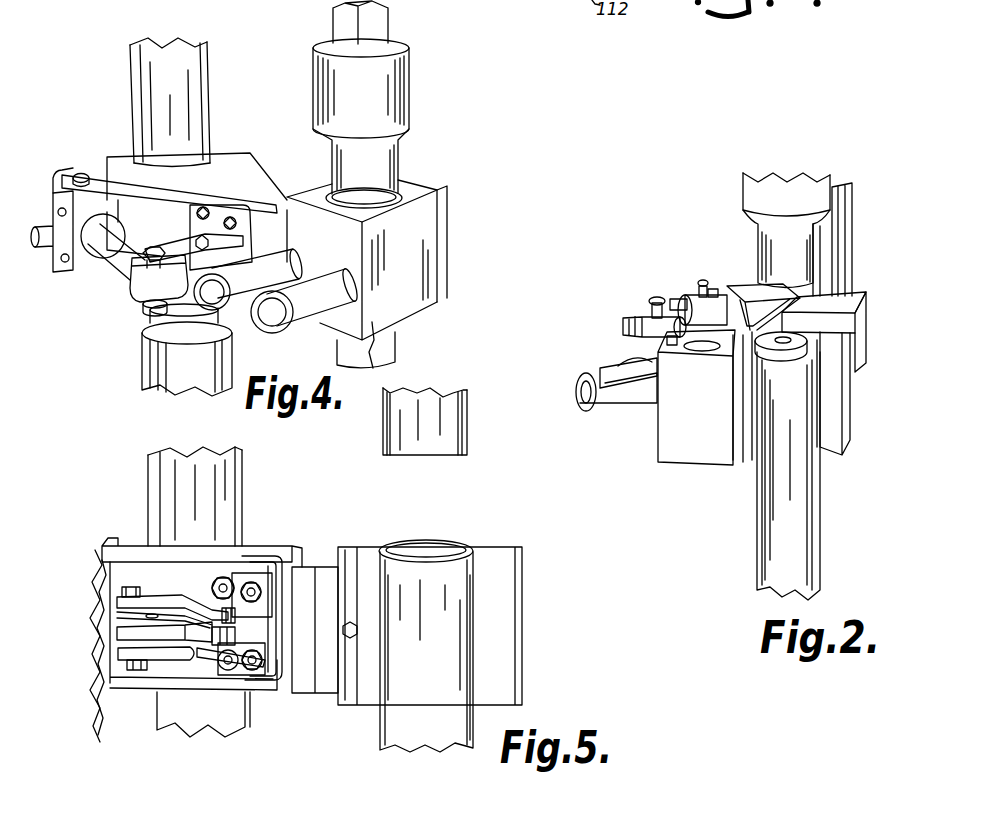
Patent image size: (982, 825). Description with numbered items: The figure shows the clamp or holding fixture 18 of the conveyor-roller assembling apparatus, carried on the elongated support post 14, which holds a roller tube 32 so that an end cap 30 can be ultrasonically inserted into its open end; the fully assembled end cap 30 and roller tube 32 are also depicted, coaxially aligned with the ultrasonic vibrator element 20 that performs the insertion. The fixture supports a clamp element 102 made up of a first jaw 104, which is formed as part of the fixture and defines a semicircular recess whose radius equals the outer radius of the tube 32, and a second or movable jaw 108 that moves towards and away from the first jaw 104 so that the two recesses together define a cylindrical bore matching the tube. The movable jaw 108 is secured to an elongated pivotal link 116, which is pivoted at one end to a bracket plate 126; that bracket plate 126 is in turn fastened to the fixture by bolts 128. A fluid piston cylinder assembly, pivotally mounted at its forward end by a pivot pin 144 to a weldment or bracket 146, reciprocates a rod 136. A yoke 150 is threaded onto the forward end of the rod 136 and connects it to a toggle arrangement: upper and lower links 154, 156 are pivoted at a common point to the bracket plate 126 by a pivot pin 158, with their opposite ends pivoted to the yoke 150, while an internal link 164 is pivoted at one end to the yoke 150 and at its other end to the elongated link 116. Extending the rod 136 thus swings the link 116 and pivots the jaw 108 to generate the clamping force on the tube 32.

In FIG. 4, the elongated support post 14 is at (146, 60).
In FIG. 5, the elongated support post 14 is at (160, 483).
In FIG. 2, the elongated support post 14 is at (840, 230).
In FIG. 4, the clamp or holding fixture 18 is at (63, 154).
In FIG. 2, the clamp or holding fixture 18 is at (628, 343).
In FIG. 4, the cylinder / actuator 20 is at (390, 104).
In FIG. 2, the cylinder / actuator 20 is at (767, 224).
In FIG. 4, the end cap 30 is at (398, 196).
In FIG. 5, the end cap 30 is at (433, 545).
In FIG. 2, the end cap 30 is at (768, 337).
In FIG. 4, the roller tube 32 is at (388, 337).
In FIG. 5, the roller tube 32 is at (445, 680).
In FIG. 2, the roller tube 32 is at (773, 488).
In FIG. 4, the clamp element 102 is at (442, 207).
In FIG. 5, the first jaw 104 is at (518, 585).
In FIG. 2, the first jaw 104 is at (833, 343).
In FIG. 2, the second or movable jaw 108 is at (672, 438).
In FIG. 4, the elongated pivotal link 116 is at (297, 268).
In FIG. 5, the elongated pivotal link 116 is at (125, 637).
In FIG. 2, the elongated pivotal link 116 is at (612, 372).
In FIG. 5, the bracket plate 126 is at (270, 597).
In FIG. 5, the bolts 128 is at (238, 574).
In FIG. 4, the rod 136 is at (113, 253).
In FIG. 4, the pivot pin 144 is at (84, 171).
In FIG. 4, the weldment or bracket 146 is at (158, 185).
In FIG. 5, the weldment or bracket 146 is at (182, 548).
In FIG. 4, the yoke 150 is at (118, 280).
In FIG. 4, the upper link 154 is at (177, 213).
In FIG. 5, the upper link 154 is at (178, 575).
In FIG. 4, the lower link 156 is at (214, 337).
In FIG. 5, the lower link 156 is at (163, 658).
In FIG. 4, the pivot pin 158 is at (205, 243).
In FIG. 5, the pivot pin 158 is at (233, 660).
In FIG. 4, the internal link 164 is at (150, 310).